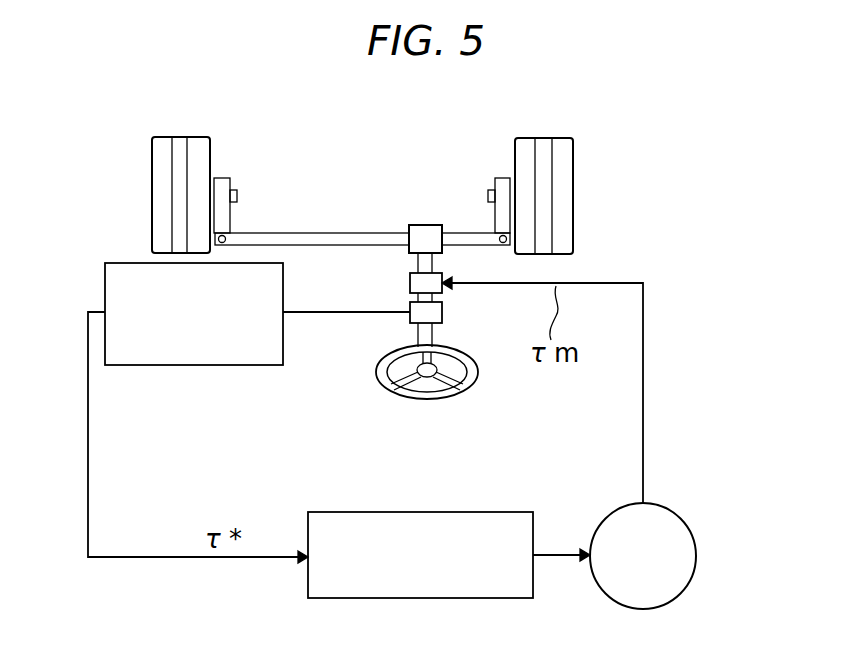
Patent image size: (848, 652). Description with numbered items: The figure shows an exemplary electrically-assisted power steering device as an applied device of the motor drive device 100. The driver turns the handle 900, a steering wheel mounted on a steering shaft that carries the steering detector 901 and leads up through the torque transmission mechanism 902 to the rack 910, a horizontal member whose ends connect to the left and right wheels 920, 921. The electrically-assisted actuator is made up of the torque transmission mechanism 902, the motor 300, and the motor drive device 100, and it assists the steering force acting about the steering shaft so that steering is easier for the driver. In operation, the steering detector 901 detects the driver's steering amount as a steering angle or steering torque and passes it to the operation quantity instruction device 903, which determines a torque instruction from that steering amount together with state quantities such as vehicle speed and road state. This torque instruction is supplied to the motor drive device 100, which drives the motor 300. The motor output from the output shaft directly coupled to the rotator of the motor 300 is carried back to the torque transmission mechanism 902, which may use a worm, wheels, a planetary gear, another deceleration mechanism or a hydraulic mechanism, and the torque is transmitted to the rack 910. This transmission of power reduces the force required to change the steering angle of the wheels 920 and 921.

The motor drive device 100 is at (422, 512).
The motor 300 is at (697, 553).
The handle (steering) 900 is at (472, 380).
The steering detector 901 is at (406, 325).
The torque transmission mechanism 902 is at (410, 285).
The operation quantity instruction device 903 is at (190, 365).
The rack 910 is at (325, 233).
The wheel 920 is at (152, 192).
The wheel 921 is at (574, 196).